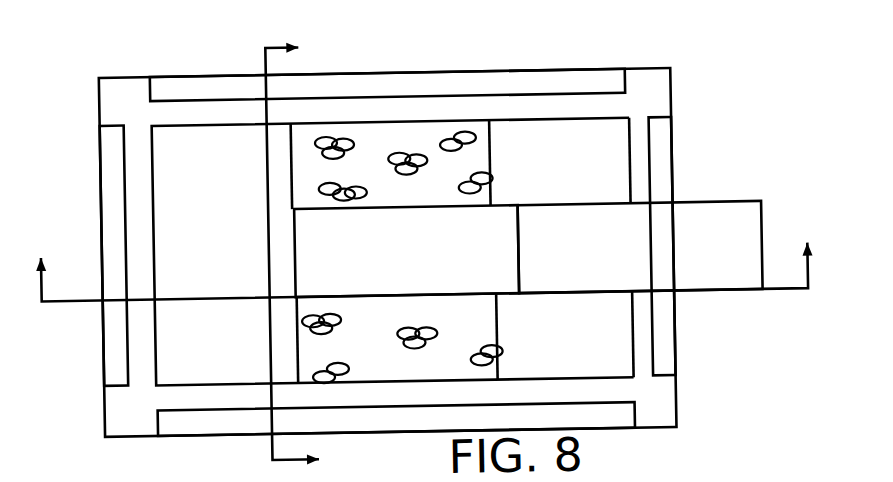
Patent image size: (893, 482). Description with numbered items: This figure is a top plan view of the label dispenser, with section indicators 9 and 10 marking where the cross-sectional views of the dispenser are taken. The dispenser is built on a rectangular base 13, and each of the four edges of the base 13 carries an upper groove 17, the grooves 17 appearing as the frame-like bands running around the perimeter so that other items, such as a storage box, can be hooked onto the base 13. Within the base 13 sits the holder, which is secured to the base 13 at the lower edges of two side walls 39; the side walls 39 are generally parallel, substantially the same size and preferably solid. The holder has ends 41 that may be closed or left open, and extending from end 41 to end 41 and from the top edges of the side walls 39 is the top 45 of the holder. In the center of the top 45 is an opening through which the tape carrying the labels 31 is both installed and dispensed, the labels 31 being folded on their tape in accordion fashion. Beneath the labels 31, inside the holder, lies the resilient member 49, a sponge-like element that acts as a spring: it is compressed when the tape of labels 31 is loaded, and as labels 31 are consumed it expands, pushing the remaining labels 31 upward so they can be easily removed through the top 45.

The base 13 is at (665, 417).
The upper groove 17 is at (400, 83).
The labels 31 is at (713, 214).
The side walls 39 is at (519, 120).
The ends 41 is at (635, 122).
The top 45 is at (606, 324).
The resilient member 49 is at (447, 136).
The section line 9- 9 is at (307, 252).
The section line 10- 10 is at (431, 251).